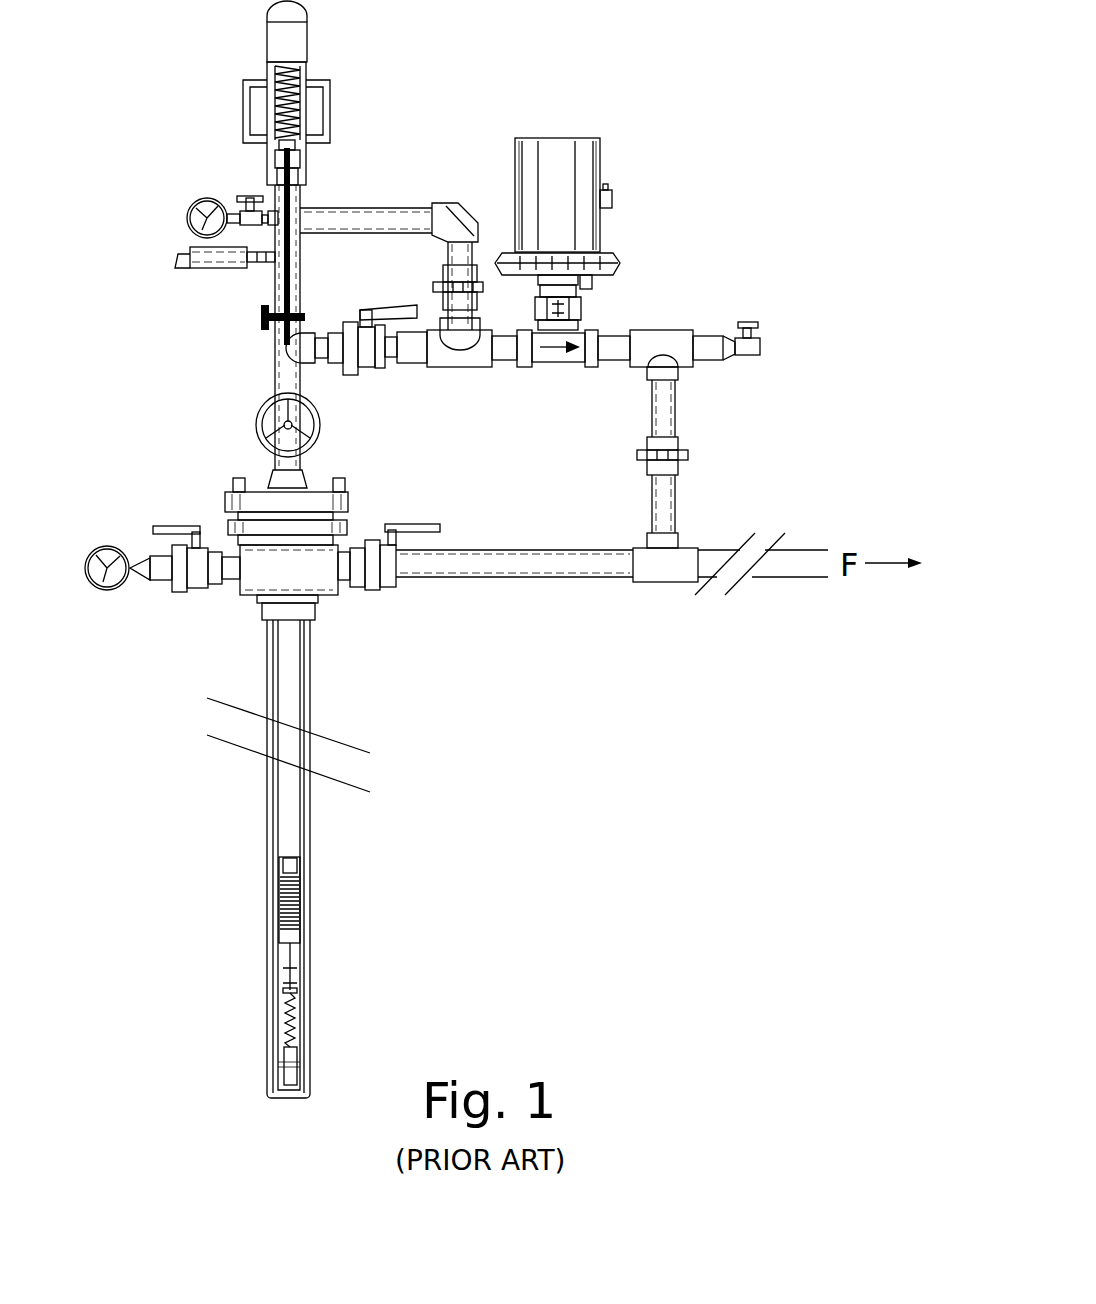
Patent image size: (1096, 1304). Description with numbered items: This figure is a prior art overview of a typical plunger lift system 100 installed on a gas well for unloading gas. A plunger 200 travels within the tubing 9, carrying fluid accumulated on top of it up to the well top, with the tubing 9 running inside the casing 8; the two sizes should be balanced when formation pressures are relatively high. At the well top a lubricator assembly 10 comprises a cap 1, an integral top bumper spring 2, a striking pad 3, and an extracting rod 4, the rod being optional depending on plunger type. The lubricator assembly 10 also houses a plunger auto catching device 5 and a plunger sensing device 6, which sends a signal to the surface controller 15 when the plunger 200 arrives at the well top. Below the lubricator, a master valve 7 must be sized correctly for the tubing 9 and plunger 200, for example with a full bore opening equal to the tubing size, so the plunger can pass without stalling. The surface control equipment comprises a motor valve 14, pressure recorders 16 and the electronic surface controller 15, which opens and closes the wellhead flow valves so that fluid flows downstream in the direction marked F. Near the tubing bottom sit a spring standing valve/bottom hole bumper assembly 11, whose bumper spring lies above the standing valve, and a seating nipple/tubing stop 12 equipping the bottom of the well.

The cap 1 is at (293, 12).
The integral top bumper spring 2 is at (297, 78).
The striking pad 3 is at (293, 152).
The extracting rod 4 is at (300, 218).
The plunger auto catching device 5 is at (172, 268).
The plunger sensing device 6 is at (258, 318).
The master valve 7 is at (262, 408).
The casing 8 is at (312, 666).
The tubing 9 is at (302, 705).
The lubricator assembly 10 is at (275, 195).
The spring standing valve/bottom hole bumper assembly 11 is at (298, 1020).
The seating nipple/tubing stop 12 is at (298, 1065).
The motor valve 14 is at (562, 367).
The surface controller 15 is at (563, 138).
The pressure recorder 16 is at (186, 217).
The plunger lift system 100 is at (655, 205).
The plunger 200 is at (302, 880).